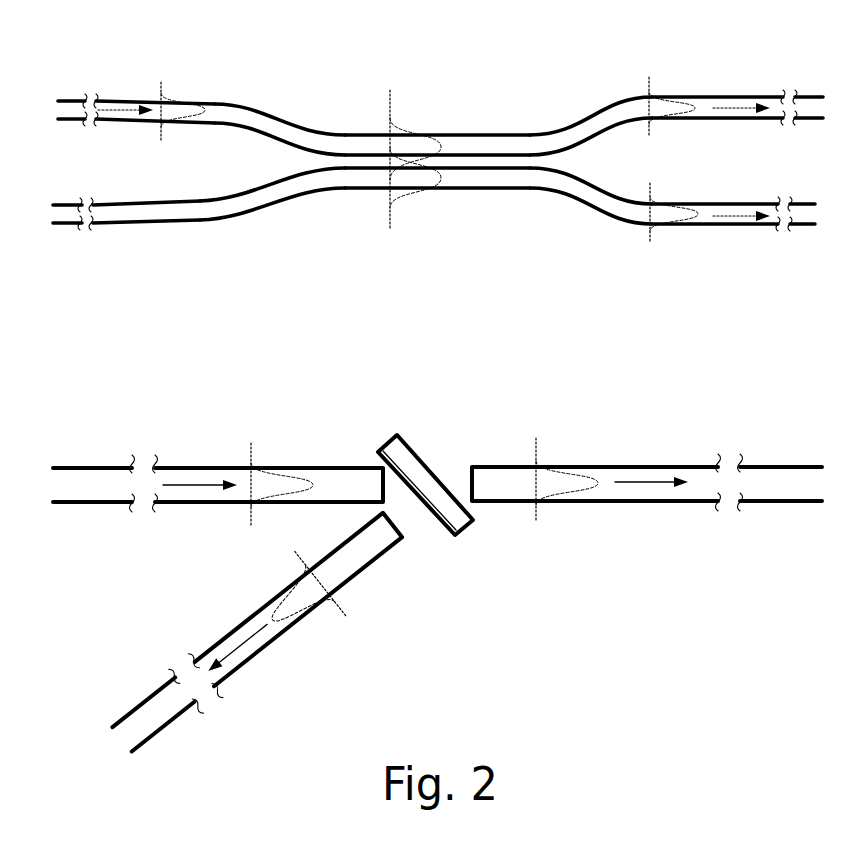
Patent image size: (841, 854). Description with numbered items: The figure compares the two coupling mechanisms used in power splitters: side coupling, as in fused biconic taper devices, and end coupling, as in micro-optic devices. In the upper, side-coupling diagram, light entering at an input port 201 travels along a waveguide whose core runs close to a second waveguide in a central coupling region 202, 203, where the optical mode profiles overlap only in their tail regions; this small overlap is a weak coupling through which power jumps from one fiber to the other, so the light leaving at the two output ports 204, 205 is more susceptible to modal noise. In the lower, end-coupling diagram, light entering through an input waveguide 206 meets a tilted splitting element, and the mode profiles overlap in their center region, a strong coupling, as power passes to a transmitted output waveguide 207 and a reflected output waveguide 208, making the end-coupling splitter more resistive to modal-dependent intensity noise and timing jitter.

The input waveguide port 201 is at (172, 96).
The coupling region of first waveguide 202 is at (405, 122).
The coupling region of second waveguide 203 is at (403, 240).
The first output waveguide port 204 is at (663, 92).
The second output waveguide port 205 is at (663, 238).
The input waveguide 206 is at (264, 455).
The transmitted output waveguide 207 is at (548, 457).
The reflected output waveguide 208 is at (330, 623).